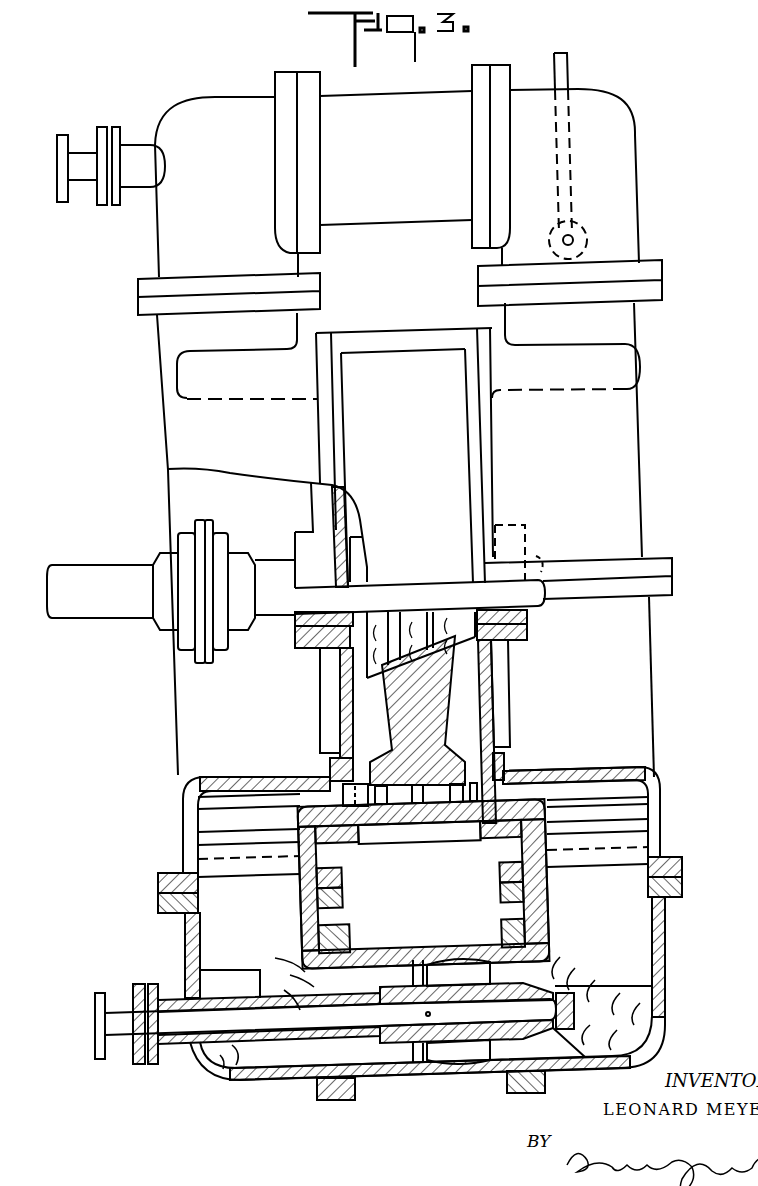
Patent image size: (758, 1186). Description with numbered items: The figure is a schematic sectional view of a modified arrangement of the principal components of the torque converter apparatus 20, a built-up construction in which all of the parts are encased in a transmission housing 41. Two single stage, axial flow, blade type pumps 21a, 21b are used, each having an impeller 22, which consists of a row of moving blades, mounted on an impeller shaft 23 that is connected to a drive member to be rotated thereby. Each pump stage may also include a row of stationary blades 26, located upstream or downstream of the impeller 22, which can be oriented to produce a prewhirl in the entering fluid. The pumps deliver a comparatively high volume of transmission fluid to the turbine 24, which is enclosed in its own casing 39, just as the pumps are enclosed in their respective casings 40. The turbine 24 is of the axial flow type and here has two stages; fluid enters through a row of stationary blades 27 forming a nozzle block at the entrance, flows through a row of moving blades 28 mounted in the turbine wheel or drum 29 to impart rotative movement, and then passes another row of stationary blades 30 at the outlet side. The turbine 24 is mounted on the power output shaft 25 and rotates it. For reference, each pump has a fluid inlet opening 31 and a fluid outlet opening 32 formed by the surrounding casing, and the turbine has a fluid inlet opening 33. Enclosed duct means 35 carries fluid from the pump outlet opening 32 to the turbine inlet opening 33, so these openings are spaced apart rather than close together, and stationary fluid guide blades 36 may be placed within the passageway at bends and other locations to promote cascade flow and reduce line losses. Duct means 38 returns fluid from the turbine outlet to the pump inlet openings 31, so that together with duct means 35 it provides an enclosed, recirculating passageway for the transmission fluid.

The torque converter apparatus 20 is at (684, 671).
The pump 21a is at (428, 1050).
The pump 21b is at (397, 96).
The impeller 22 is at (465, 1055).
The impeller shaft 23 is at (124, 1027).
The turbine 24 is at (509, 685).
The power output shaft 25 is at (105, 614).
The stationary blades 26 is at (397, 1048).
The stationary blades 27 is at (372, 808).
The moving blades 28 is at (450, 808).
The turbine wheel or drum 29 is at (447, 775).
The stationary blades 30 is at (475, 808).
The fluid inlet opening 31 is at (558, 950).
The fluid outlet opening 32 is at (278, 975).
The fluid inlet opening 33 is at (325, 798).
The enclosed duct means 35 is at (170, 247).
The stationary fluid guide blades 36 is at (205, 820).
The duct means 38 is at (628, 220).
The casing 39 is at (494, 731).
The casing 40 is at (450, 92).
The transmission housing 41 is at (240, 1083).